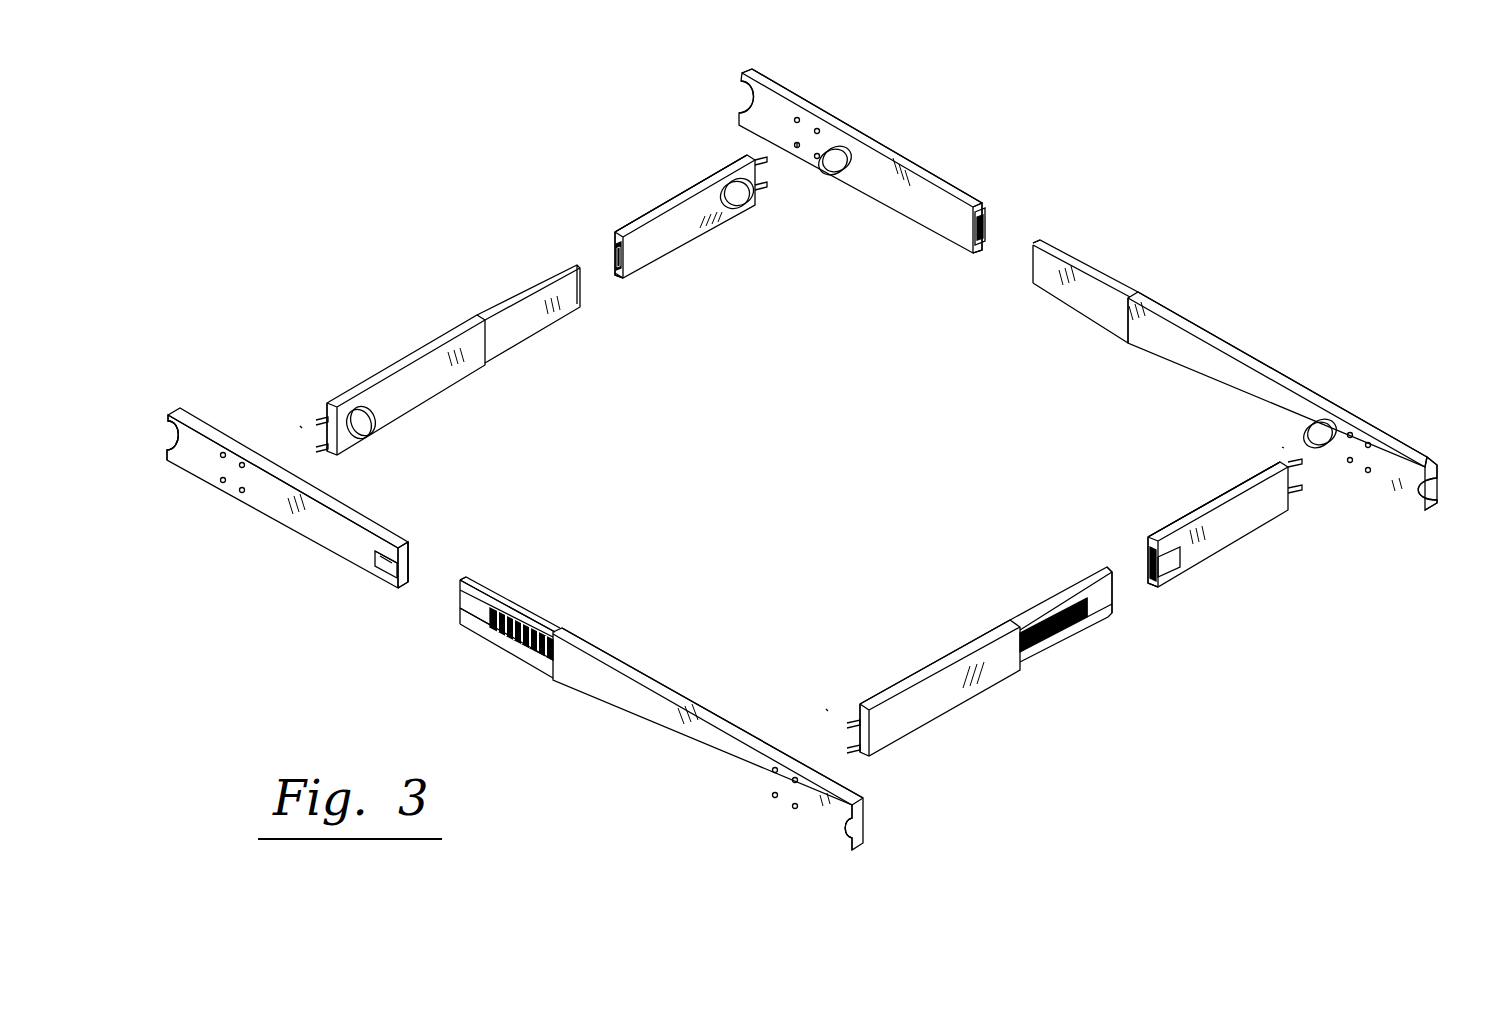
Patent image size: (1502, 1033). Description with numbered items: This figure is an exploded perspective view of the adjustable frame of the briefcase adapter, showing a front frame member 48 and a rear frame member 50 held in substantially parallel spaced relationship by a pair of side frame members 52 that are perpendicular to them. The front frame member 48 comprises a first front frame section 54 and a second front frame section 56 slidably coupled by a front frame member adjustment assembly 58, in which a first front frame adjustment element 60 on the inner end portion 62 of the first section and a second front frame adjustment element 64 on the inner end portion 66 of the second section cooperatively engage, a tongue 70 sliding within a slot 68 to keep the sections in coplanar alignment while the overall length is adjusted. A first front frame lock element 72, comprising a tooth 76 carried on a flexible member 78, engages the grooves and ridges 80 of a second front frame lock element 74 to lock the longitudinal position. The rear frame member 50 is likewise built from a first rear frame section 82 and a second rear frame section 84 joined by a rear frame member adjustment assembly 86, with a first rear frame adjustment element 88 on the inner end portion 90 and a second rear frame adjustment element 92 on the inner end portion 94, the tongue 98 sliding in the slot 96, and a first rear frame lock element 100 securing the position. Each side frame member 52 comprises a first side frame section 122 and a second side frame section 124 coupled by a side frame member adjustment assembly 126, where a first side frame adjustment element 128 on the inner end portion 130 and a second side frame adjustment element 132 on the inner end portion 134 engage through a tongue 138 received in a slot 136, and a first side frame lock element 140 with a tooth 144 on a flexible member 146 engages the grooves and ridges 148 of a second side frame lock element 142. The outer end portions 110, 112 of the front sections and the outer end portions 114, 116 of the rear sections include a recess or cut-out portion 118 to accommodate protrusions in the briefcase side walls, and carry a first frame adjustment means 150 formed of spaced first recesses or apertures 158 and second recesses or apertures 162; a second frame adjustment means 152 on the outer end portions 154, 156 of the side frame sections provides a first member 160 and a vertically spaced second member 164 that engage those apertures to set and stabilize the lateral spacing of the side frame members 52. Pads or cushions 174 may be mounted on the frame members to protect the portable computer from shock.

The front frame member 48 is at (568, 710).
The rear frame member 50 is at (1170, 245).
The side frame member 52 is at (490, 265).
The first front frame section 54 is at (310, 540).
The second front frame section 56 is at (640, 737).
The front frame member adjustment assembly 58 is at (545, 573).
The first front frame adjustment element 60 is at (410, 553).
The inner end portion 62 is at (340, 548).
The second front frame adjustment element 64 is at (565, 613).
The inner end portion 66 is at (593, 645).
The slot 68 is at (412, 570).
The tongue 70 is at (500, 580).
The first front frame lock element 72 is at (375, 545).
The second front frame lock element 74 is at (512, 647).
The tooth 76 is at (410, 577).
The flexible member 78 is at (385, 562).
The grooves and ridges 80 is at (492, 612).
The first rear frame section 82 is at (885, 168).
The second rear frame section 84 is at (1190, 340).
The rear frame member adjustment assembly 86 is at (985, 288).
The first rear frame adjustment element 88 is at (987, 213).
The inner end portion 90 is at (940, 175).
The second rear frame adjustment element 92 is at (1085, 242).
The inner end portion 94 is at (1165, 310).
The slot 96 is at (975, 250).
The tongue 98 is at (1080, 308).
The first rear frame lock element 100 is at (994, 212).
The outer end portion 110 is at (210, 465).
The outer end portion 112 is at (830, 832).
The outer end portion 114 is at (740, 77).
The outer end portion 116 is at (1402, 445).
The recess or cut-out portion 118 is at (736, 100).
The first side frame section 122 is at (612, 230).
The second side frame section 124 is at (415, 355).
The side frame member adjustment assembly 126 is at (617, 285).
The first side frame adjustment element 128 is at (636, 270).
The inner end portion 130 is at (658, 257).
The second side frame adjustment element 132 is at (470, 283).
The inner end portion 134 is at (982, 640).
The slot 136 is at (630, 280).
The tongue 138 is at (577, 263).
The first side frame lock element 140 is at (615, 255).
The second side frame lock element 142 is at (1050, 640).
The tooth 144 is at (613, 263).
The flexible member 146 is at (1173, 563).
The grooves and ridges 148 is at (1080, 618).
The first frame adjustment means 150 is at (790, 128).
The second frame adjustment means 152 is at (797, 150).
The outer end portion 154 is at (712, 178).
The outer end portion 156 is at (393, 375).
The first recesses or apertures 158 is at (817, 158).
The first member 160 is at (773, 182).
The second recesses or apertures 162 is at (815, 128).
The second member 164 is at (765, 160).
The pads or cushions 174 is at (830, 143).